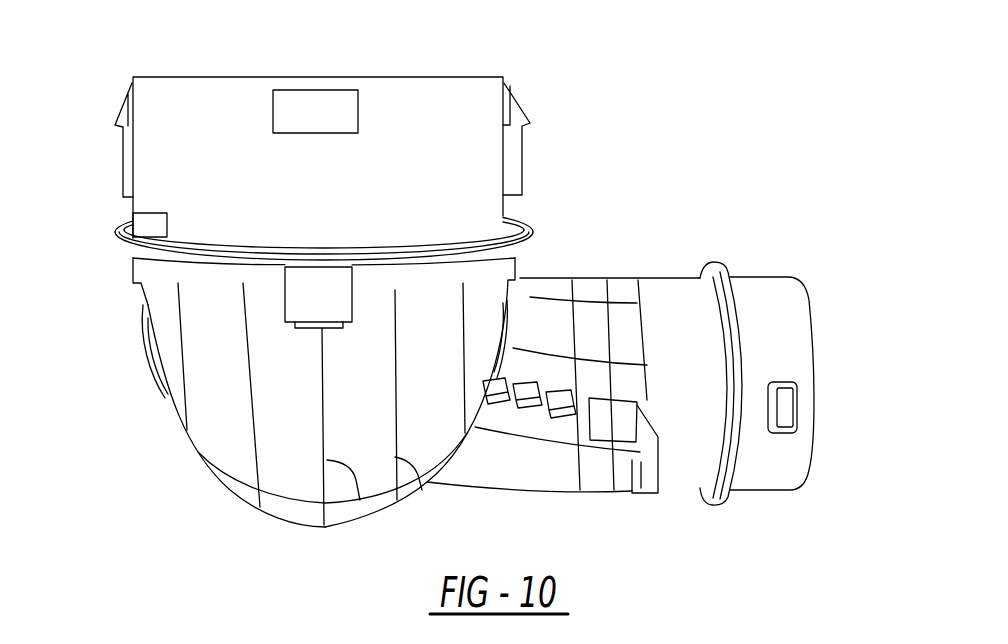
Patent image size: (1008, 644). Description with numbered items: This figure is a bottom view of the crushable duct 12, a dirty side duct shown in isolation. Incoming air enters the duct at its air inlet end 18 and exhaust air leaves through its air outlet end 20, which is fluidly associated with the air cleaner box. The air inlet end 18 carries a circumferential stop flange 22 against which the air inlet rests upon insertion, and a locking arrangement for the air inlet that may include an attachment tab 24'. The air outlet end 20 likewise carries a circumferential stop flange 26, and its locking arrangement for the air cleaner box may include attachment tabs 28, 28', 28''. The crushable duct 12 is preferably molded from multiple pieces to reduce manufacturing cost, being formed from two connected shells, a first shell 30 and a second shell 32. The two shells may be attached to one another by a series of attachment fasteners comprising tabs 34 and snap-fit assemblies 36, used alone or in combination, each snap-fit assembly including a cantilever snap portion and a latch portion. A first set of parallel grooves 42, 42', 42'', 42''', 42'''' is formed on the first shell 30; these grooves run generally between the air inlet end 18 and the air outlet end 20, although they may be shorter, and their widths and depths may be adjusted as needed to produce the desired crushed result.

The crushable duct 12 is at (688, 224).
The air inlet end 18 is at (774, 283).
The air outlet end 20 is at (425, 92).
The circumferential stop flange 22 is at (716, 263).
The attachment tab 24' is at (812, 459).
The circumferential stop flange 26 is at (517, 224).
The attachment tab 28 is at (553, 125).
The attachment tab 28' is at (307, 68).
The attachment tab 28'' is at (102, 117).
The first shell 30 is at (625, 482).
The second shell 32 is at (561, 291).
The tabs 34 is at (528, 398).
The snap-fit assemblies 36 is at (615, 428).
The groove 42 is at (142, 380).
The groove 42' is at (207, 411).
The groove 42'' is at (339, 422).
The groove 42''' is at (429, 503).
The groove 42'''' is at (565, 285).